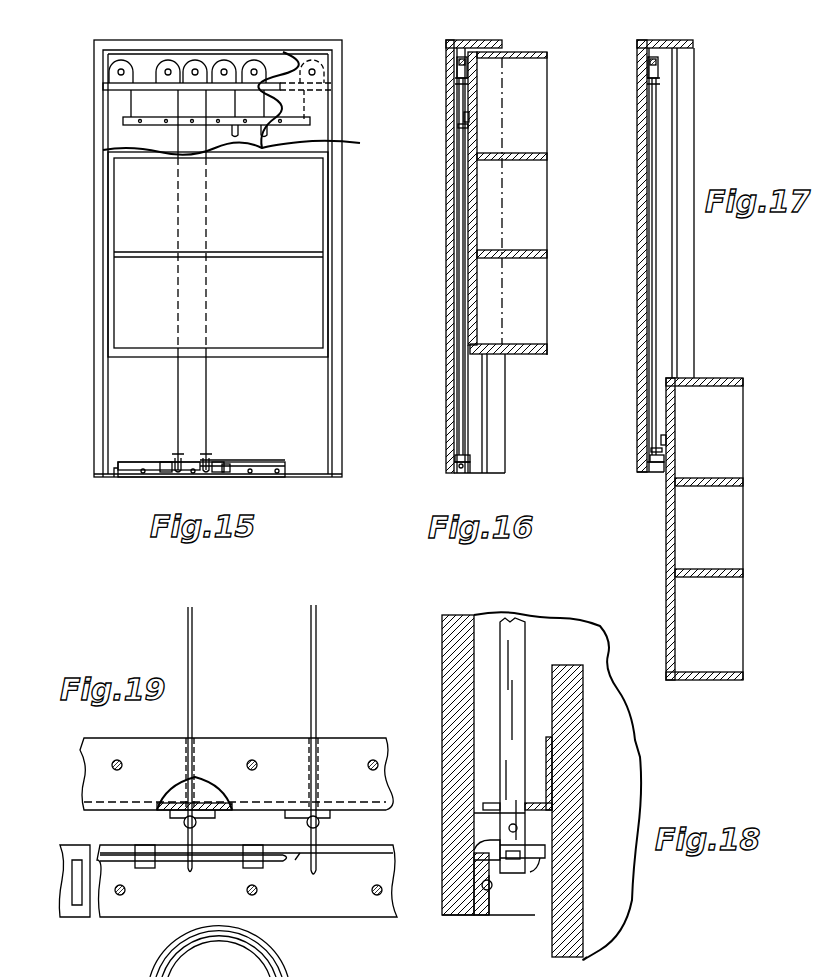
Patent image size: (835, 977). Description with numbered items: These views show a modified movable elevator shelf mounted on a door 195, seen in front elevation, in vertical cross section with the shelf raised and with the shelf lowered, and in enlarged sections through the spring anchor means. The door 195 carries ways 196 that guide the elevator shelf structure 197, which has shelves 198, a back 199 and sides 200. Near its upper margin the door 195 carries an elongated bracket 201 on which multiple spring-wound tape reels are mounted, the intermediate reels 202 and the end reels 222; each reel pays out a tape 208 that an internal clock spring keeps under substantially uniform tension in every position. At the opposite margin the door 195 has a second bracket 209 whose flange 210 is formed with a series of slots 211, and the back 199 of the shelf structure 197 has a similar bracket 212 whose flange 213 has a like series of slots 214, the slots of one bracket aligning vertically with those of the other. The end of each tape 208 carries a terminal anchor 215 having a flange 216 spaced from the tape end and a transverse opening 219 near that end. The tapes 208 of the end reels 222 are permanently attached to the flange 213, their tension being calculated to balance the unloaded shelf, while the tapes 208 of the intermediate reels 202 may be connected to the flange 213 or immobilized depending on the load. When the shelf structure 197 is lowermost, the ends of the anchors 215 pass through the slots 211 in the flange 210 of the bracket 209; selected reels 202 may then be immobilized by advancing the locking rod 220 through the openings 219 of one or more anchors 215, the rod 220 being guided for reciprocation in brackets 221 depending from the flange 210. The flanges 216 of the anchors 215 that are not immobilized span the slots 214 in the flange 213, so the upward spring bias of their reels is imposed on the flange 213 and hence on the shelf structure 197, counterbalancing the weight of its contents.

In FIG. 16, the door 195 is at (445, 350).
In FIG. 17, the door 195 is at (647, 316).
In FIG. 18, the door 195 is at (448, 733).
In FIG. 15, the ways 196 is at (108, 398).
In FIG. 16, the ways 196 is at (487, 425).
In FIG. 17, the ways 196 is at (677, 320).
In FIG. 15, the elevator shelf structure 197 is at (316, 357).
In FIG. 16, the elevator shelf structure 197 is at (563, 248).
In FIG. 17, the elevator shelf structure 197 is at (757, 550).
In FIG. 18, the elevator shelf structure 197 is at (650, 782).
In FIG. 15, the shelves 198 is at (298, 255).
In FIG. 16, the shelves 198 is at (530, 258).
In FIG. 17, the shelves 198 is at (745, 478).
In FIG. 15, the back 199 is at (243, 105).
In FIG. 16, the back 199 is at (478, 205).
In FIG. 17, the back 199 is at (670, 536).
In FIG. 18, the back 199 is at (580, 717).
In FIG. 15, the sides 200 is at (112, 198).
In FIG. 16, the sides 200 is at (540, 103).
In FIG. 15, the elongated bracket 201 is at (103, 88).
In FIG. 16, the elongated bracket 201 is at (468, 86).
In FIG. 17, the elongated bracket 201 is at (660, 80).
In FIG. 15, the tape reels 202 is at (255, 60).
In FIG. 16, the tape reels 202 is at (457, 70).
In FIG. 17, the tape reels 202 is at (653, 64).
In FIG. 15, the tape 208 is at (182, 104).
In FIG. 16, the tape 208 is at (463, 398).
In FIG. 17, the tape 208 is at (655, 400).
In FIG. 18, the tape 208 is at (505, 680).
In FIG. 19, the tape 208 is at (192, 680).
In FIG. 15, the second bracket 209 is at (262, 474).
In FIG. 16, the second bracket 209 is at (455, 470).
In FIG. 17, the second bracket 209 is at (647, 466).
In FIG. 18, the second bracket 209 is at (480, 915).
In FIG. 19, the second bracket 209 is at (335, 905).
In FIG. 15, the flange 210 is at (283, 462).
In FIG. 16, the flange 210 is at (455, 458).
In FIG. 17, the flange 210 is at (650, 456).
In FIG. 18, the flange 210 is at (542, 866).
In FIG. 19, the flange 210 is at (368, 848).
In FIG. 15, the slots 211 is at (264, 460).
In FIG. 18, the slots 211 is at (480, 842).
In FIG. 19, the slots 211 is at (198, 836).
In FIG. 15, the bracket 212 is at (170, 126).
In FIG. 16, the bracket 212 is at (470, 116).
In FIG. 17, the bracket 212 is at (667, 440).
In FIG. 18, the bracket 212 is at (552, 778).
In FIG. 19, the bracket 212 is at (338, 752).
In FIG. 16, the flange 213 is at (466, 130).
In FIG. 17, the flange 213 is at (664, 452).
In FIG. 18, the flange 213 is at (540, 806).
In FIG. 19, the flange 213 is at (220, 805).
In FIG. 18, the slots 214 is at (483, 806).
In FIG. 19, the slots 214 is at (196, 800).
In FIG. 15, the terminal anchors 215 is at (265, 136).
In FIG. 16, the terminal anchors 215 is at (463, 470).
In FIG. 18, the terminal anchors 215 is at (518, 828).
In FIG. 19, the terminal anchors 215 is at (320, 823).
In FIG. 15, the flanges 216 is at (236, 128).
In FIG. 18, the flanges 216 is at (500, 814).
In FIG. 19, the flanges 216 is at (175, 816).
In FIG. 18, the transverse openings 219 is at (505, 855).
In FIG. 19, the transverse openings 219 is at (300, 865).
In FIG. 15, the locking rod 220 is at (152, 472).
In FIG. 18, the locking rod 220 is at (513, 855).
In FIG. 19, the locking rod 220 is at (225, 862).
In FIG. 15, the brackets 221 is at (224, 474).
In FIG. 19, the brackets 221 is at (146, 870).
In FIG. 15, the end reels 222 is at (117, 65).